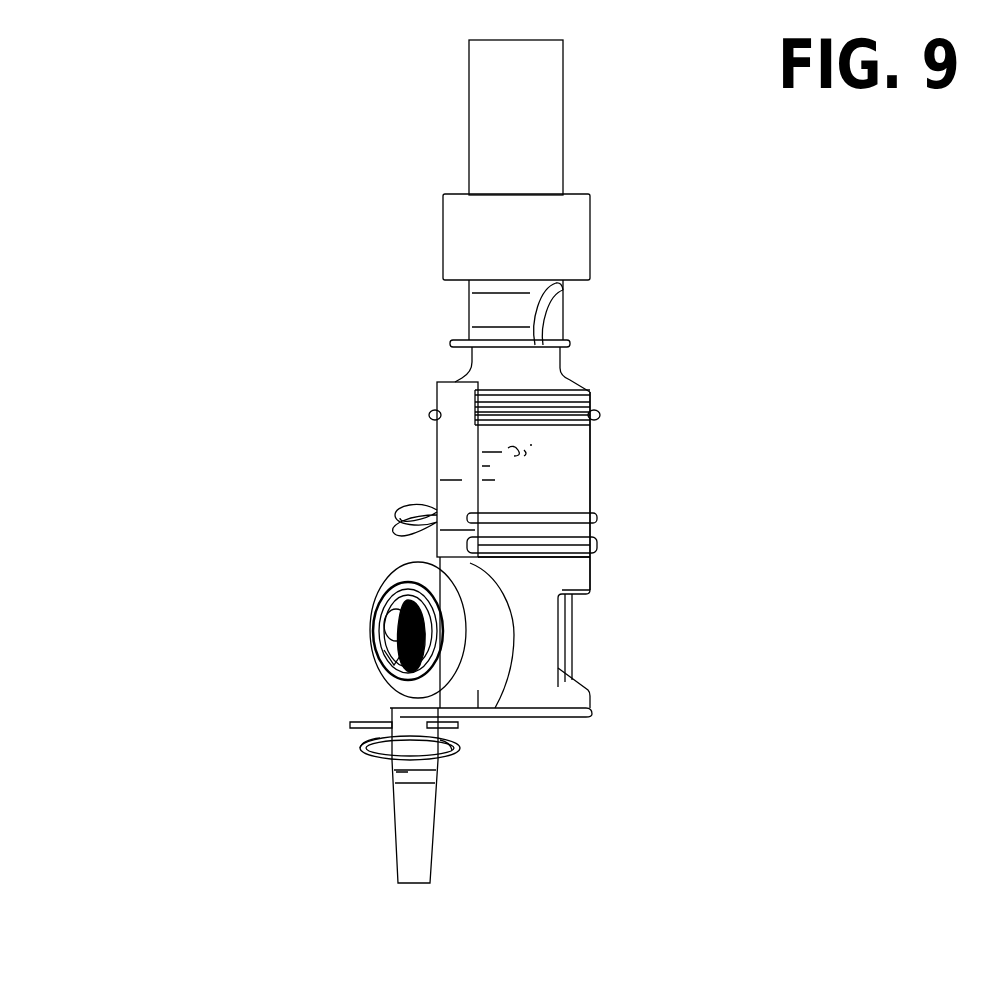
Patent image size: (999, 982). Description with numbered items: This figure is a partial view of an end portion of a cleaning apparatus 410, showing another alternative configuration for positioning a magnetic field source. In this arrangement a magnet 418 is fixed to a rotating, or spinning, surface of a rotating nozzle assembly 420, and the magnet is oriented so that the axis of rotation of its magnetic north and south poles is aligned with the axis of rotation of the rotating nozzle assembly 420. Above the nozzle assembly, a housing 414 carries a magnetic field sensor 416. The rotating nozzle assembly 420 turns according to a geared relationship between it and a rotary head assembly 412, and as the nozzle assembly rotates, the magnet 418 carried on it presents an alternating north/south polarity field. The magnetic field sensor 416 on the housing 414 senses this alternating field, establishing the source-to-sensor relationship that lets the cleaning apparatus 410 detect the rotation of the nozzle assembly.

The cleaning apparatus 410 is at (312, 406).
The rotary head assembly 412 is at (612, 587).
The housing 414 is at (490, 137).
The magnetic field sensor 416 is at (552, 253).
The magnet 418 is at (400, 628).
The rotating nozzle assembly 420 is at (370, 637).